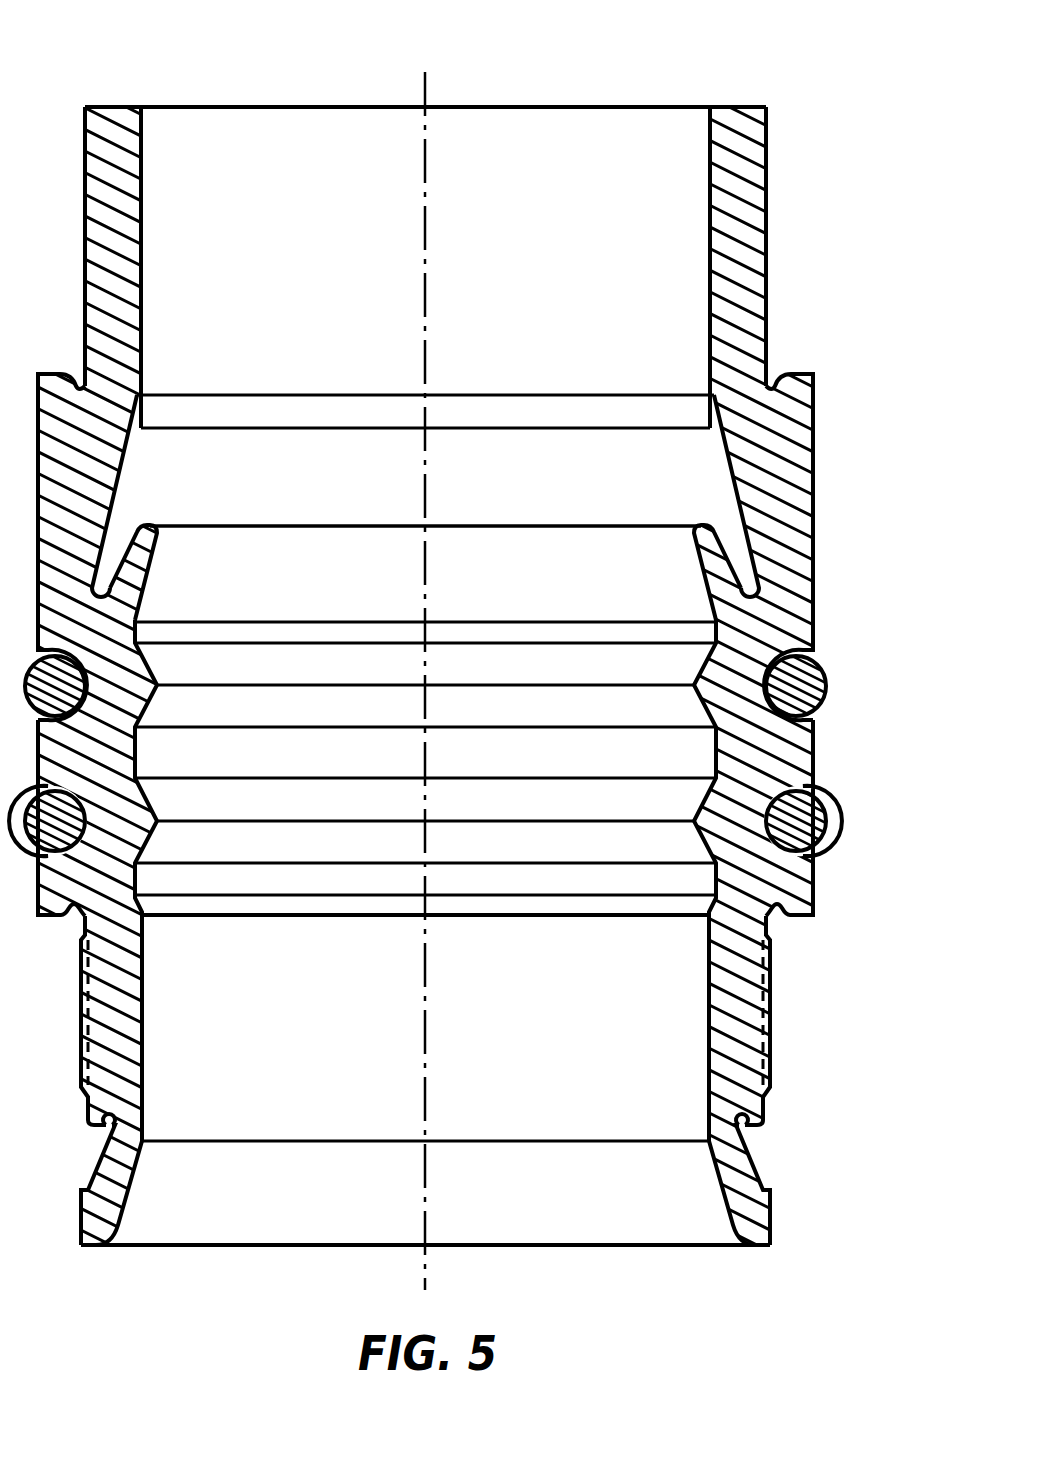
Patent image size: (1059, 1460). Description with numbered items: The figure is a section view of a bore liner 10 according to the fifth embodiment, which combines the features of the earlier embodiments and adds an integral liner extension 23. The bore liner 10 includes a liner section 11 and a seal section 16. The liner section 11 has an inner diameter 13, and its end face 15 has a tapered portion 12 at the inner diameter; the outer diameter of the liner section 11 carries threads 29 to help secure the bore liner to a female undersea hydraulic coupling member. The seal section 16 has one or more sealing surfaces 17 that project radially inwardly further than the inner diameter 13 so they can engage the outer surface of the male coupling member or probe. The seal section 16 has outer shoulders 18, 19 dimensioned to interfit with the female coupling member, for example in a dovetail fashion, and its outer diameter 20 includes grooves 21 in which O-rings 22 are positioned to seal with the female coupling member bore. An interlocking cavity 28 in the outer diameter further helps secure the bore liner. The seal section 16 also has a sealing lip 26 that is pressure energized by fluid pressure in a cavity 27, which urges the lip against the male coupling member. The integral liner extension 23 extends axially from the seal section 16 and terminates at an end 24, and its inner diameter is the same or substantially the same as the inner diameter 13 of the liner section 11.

The bore liner 10 is at (694, 46).
The liner section 11 is at (749, 1055).
The tapered portion 12 is at (720, 1188).
The inner diameter 13 is at (707, 1025).
The end face 15 is at (764, 1248).
The seal section 16 is at (794, 606).
The sealing surfaces 17 is at (699, 823).
The outer shoulder 18 is at (777, 378).
The outer shoulder 19 is at (790, 914).
The outer diameter 20 is at (813, 753).
The grooves 21 is at (811, 653).
The O-rings 22 is at (827, 822).
The integral liner extension 23 is at (750, 190).
The end 24 is at (738, 106).
The sealing lip 26 is at (707, 556).
The cavity 27 is at (752, 585).
The interlocking cavity 28 is at (752, 1153).
The threads 29 is at (764, 1020).